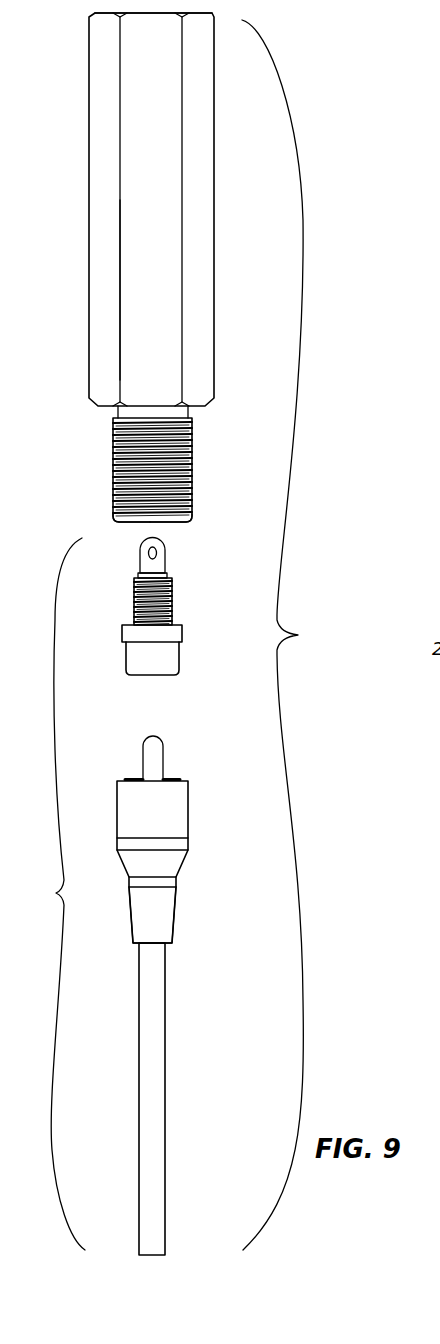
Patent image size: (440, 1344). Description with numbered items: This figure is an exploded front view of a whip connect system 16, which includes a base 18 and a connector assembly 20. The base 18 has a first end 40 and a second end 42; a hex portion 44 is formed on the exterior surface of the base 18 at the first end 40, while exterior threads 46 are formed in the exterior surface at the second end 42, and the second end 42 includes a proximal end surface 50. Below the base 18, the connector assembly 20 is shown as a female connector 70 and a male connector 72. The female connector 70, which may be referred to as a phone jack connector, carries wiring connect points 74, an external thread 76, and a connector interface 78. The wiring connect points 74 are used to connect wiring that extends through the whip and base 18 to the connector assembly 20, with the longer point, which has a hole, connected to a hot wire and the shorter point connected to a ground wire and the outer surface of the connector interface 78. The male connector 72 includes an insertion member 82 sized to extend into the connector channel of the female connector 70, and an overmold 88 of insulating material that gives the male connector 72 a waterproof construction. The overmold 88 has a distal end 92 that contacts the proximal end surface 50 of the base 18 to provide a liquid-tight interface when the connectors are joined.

The whip connect system 16 is at (287, 635).
The base 18 is at (86, 224).
The connector assembly 20 is at (55, 894).
The first end 40 is at (89, 33).
The second end 42 is at (113, 520).
The hex portion 44 is at (128, 138).
The exterior threads 46 is at (113, 455).
The proximal end surface 50 is at (173, 519).
The female connector 70 is at (169, 614).
The male connector 72 is at (189, 991).
The wiring connect points 74 is at (167, 578).
The external thread 76 is at (134, 600).
The connector interface 78 is at (130, 657).
The insertion member 82 is at (160, 752).
The overmold 88 is at (176, 920).
The distal end 92 is at (180, 776).